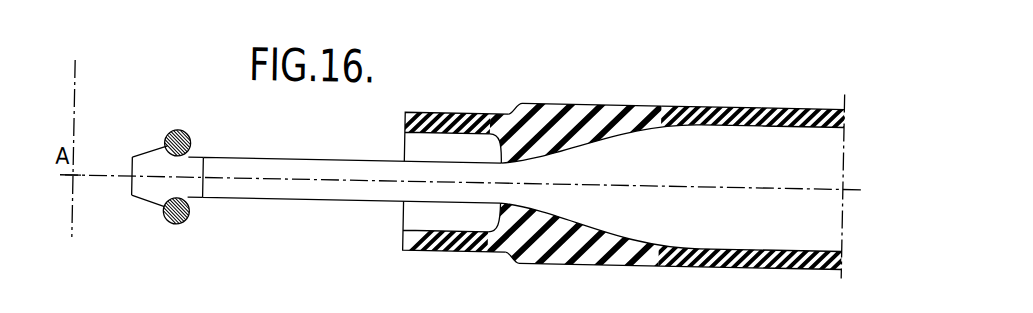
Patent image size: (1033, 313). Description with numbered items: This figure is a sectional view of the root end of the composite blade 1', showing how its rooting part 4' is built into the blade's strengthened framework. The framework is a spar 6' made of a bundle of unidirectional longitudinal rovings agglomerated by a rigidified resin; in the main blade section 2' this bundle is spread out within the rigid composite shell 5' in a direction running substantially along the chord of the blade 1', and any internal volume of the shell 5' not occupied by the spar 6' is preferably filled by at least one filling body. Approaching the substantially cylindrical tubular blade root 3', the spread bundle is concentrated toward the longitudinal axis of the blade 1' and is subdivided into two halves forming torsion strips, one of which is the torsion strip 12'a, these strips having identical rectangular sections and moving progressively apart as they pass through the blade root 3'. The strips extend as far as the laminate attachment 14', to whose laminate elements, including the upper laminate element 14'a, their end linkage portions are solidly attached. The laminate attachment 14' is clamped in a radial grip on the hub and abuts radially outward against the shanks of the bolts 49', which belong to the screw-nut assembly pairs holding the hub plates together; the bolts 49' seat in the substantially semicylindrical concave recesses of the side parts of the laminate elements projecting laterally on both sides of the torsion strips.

The blade 1' is at (583, 115).
The main blade section 2' is at (657, 255).
The tubular blade root 3' is at (458, 251).
The rooting part 4' is at (426, 129).
The rigid composite shell 5' is at (761, 98).
The spar 6' is at (784, 100).
The torsion strip 12'a is at (352, 203).
The laminate attachment 14' is at (150, 175).
The upper laminate element 14'a is at (139, 148).
The bolt 49' is at (191, 167).